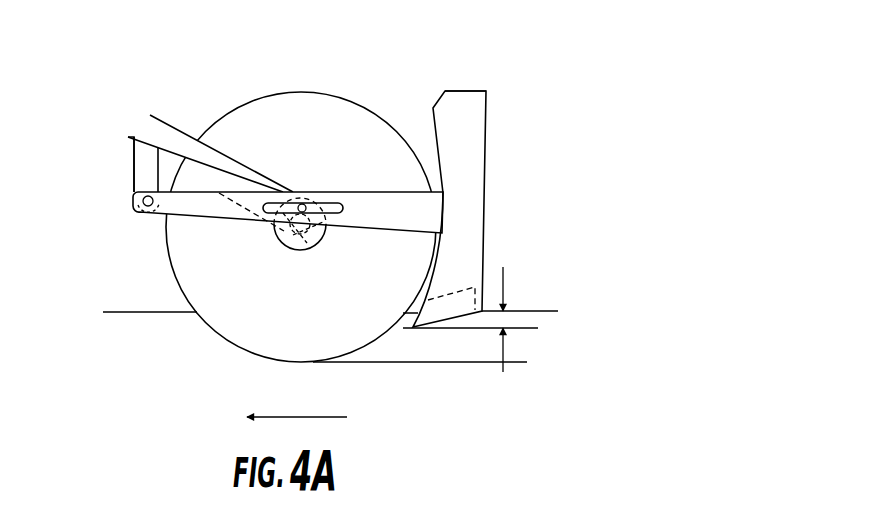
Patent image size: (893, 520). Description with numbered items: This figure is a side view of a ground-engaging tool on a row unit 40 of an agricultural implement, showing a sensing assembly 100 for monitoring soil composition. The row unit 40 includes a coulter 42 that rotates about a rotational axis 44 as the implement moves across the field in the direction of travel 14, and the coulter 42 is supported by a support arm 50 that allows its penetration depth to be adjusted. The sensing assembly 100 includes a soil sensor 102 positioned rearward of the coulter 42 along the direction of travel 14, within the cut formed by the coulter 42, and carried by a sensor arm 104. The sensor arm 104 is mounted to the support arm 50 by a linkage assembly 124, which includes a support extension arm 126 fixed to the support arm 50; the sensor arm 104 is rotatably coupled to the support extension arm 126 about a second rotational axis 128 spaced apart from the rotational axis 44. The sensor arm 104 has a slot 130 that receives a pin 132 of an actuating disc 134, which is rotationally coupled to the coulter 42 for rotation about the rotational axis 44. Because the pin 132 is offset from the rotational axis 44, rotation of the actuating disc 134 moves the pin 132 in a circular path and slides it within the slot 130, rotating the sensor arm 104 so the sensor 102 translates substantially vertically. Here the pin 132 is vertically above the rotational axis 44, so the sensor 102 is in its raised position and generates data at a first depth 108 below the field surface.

The row unit 40 is at (100, 105).
The coulter 42 is at (312, 108).
The rotational axis 44 is at (283, 244).
The support arm 50 is at (163, 142).
The direction of travel 14 is at (290, 417).
The sensing assembly 100 is at (427, 78).
The soil sensor 102 is at (450, 306).
The sensor arm 104 is at (470, 143).
The first depth 108 is at (505, 288).
The linkage assembly 124 is at (138, 227).
The support extension arm 126 is at (147, 170).
The second rotational axis 128 is at (137, 204).
The slot 130 is at (330, 193).
The pin 132 is at (297, 202).
The actuating disc 134 is at (307, 246).